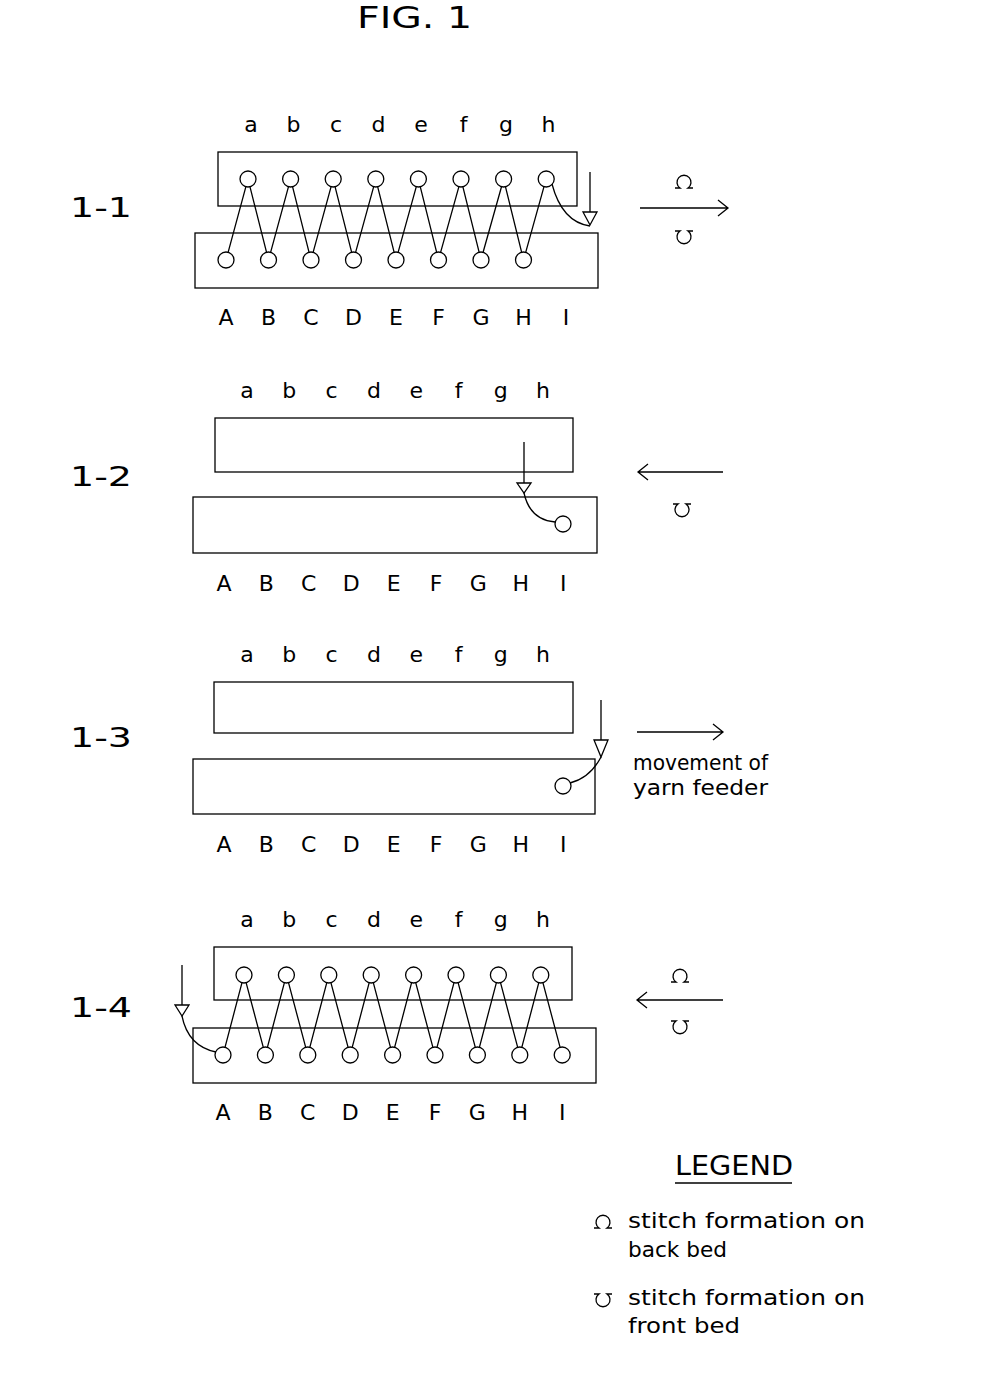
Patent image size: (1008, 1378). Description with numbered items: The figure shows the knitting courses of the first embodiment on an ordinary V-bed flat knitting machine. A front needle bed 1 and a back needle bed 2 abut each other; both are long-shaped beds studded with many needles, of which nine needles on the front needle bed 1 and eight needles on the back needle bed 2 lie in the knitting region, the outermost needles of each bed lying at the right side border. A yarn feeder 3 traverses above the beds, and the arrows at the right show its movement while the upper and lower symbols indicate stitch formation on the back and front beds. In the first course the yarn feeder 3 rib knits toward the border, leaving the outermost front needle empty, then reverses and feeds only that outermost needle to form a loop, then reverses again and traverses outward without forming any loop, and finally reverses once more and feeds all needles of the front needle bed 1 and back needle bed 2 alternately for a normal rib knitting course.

The front needle bed 1 is at (195, 258).
The back needle bed 2 is at (218, 170).
The yarn feeder 3 is at (590, 190).